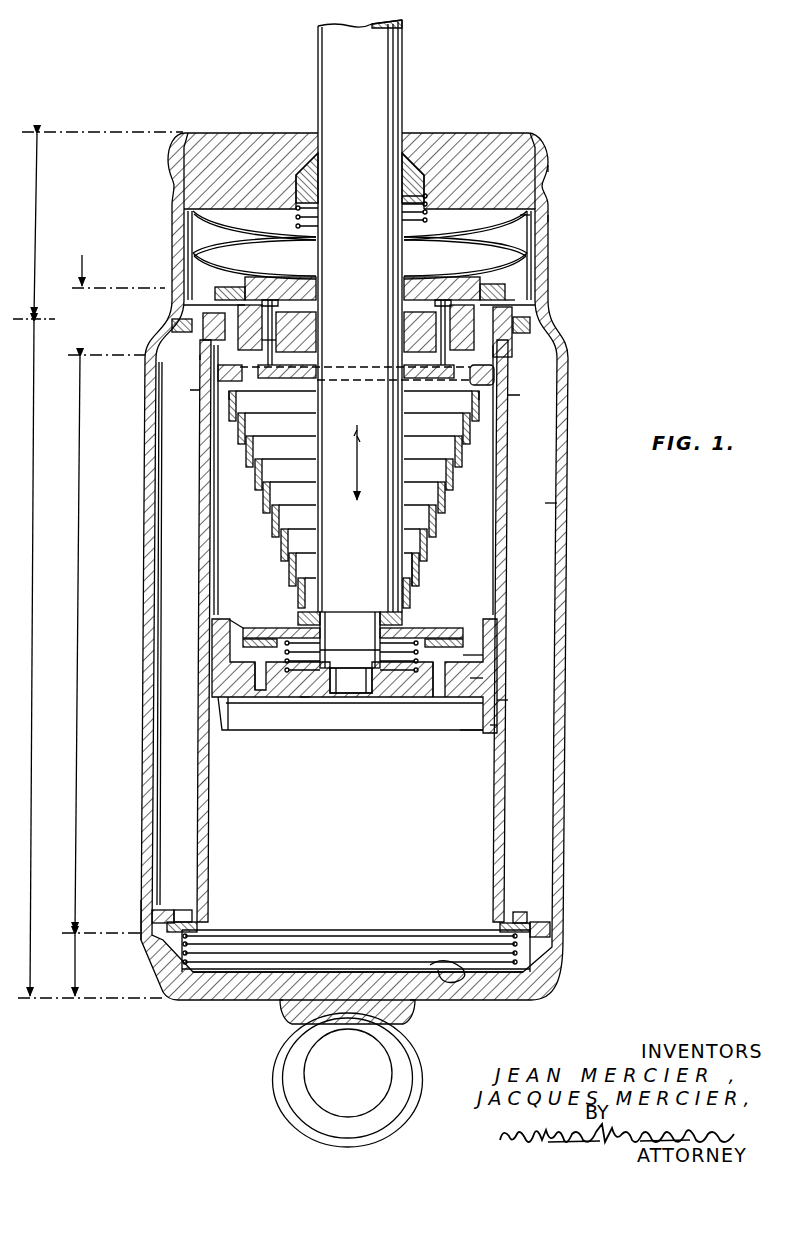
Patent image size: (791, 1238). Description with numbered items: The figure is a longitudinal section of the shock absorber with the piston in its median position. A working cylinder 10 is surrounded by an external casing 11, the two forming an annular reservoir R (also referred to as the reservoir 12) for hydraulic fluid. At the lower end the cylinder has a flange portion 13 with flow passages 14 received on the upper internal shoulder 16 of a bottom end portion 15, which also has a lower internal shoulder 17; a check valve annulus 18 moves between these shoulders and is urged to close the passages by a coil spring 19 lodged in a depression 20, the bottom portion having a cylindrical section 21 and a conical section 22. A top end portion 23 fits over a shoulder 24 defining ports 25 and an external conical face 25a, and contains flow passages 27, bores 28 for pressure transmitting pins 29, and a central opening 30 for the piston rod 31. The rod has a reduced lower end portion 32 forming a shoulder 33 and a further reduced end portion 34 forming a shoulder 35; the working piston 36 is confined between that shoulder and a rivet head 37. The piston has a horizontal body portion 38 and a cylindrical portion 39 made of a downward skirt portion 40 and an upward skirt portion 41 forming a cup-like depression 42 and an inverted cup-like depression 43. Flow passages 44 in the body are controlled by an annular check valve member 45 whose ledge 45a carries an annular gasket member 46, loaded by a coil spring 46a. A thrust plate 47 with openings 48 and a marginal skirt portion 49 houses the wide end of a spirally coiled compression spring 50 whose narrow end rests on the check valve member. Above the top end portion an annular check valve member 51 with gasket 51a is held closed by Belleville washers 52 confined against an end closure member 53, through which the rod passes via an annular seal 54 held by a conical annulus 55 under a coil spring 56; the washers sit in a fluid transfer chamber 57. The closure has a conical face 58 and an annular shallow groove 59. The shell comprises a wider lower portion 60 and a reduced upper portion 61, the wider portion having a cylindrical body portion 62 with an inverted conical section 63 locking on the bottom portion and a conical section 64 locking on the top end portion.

The working cylinder 10 is at (500, 540).
The external casing 11 is at (570, 568).
The reservoir 12 is at (518, 715).
The flange portion 13 is at (528, 925).
The flow passages 14 is at (515, 912).
The bottom end portion 15 is at (280, 1000).
The upper internal shoulder 16 is at (160, 910).
The lower internal shoulder 17 is at (146, 960).
The check valve annulus 18 is at (205, 925).
The coil spring 19 is at (340, 945).
The depression 20 is at (455, 982).
The cylindrical section 21 is at (545, 932).
The conical section 22 is at (556, 977).
The top end portion 23 is at (282, 320).
The shoulder 24 is at (204, 345).
The flow passages 25 is at (535, 325).
The external conical face 25a is at (186, 328).
The flow passages 27 is at (222, 372).
The bores 28 is at (387, 317).
The pressure transmitting pins 29 is at (272, 320).
The central opening 30 is at (297, 360).
The piston rod 31 is at (360, 316).
The reduced lower end portion 32 is at (350, 640).
The shoulder 33 is at (324, 622).
The further reduced extreme end portion 34 is at (351, 680).
The shoulder 35 is at (350, 656).
The working piston 36 is at (497, 672).
The rivet head 37 is at (350, 713).
The horizontal body portion 38 is at (305, 703).
The cylindrical portion 39 is at (483, 678).
The downwardly extending skirt portion 40 is at (497, 728).
The upwardly extending skirt portion 41 is at (497, 600).
The cup-like depression 42 is at (237, 628).
The inverted cup-like depression 43 is at (470, 738).
The flow passages 44 is at (262, 685).
The annular check valve member 45 is at (440, 625).
The downwardly extending ledge 45a is at (463, 650).
The annular gasket member 46 is at (483, 645).
The coil spring 46a is at (420, 640).
The thrust plate 47 is at (478, 398).
The openings 48 is at (232, 395).
The marginal skirt portion 49 is at (200, 390).
The spirally coiled compression spring 50 is at (414, 560).
The annular check valve member 51 is at (505, 292).
The annular gasket 51a is at (510, 300).
The Belleville washers 52 is at (200, 232).
The end closure member 53 is at (478, 140).
The annular seal 54 is at (314, 190).
The conical annulus 55 is at (415, 195).
The coil spring 56 is at (410, 215).
The fluid transfer chamber 57 is at (527, 233).
The conical face 58 is at (549, 150).
The annular shallow groove 59 is at (548, 200).
The wider lower portion 60 is at (88, 660).
The reduced upper portion 61 is at (99, 224).
The cylindrical body portion 62 is at (105, 643).
The inverted conical section 63 is at (99, 964).
The conical section 64 is at (51, 319).
The annular reservoir R is at (545, 503).